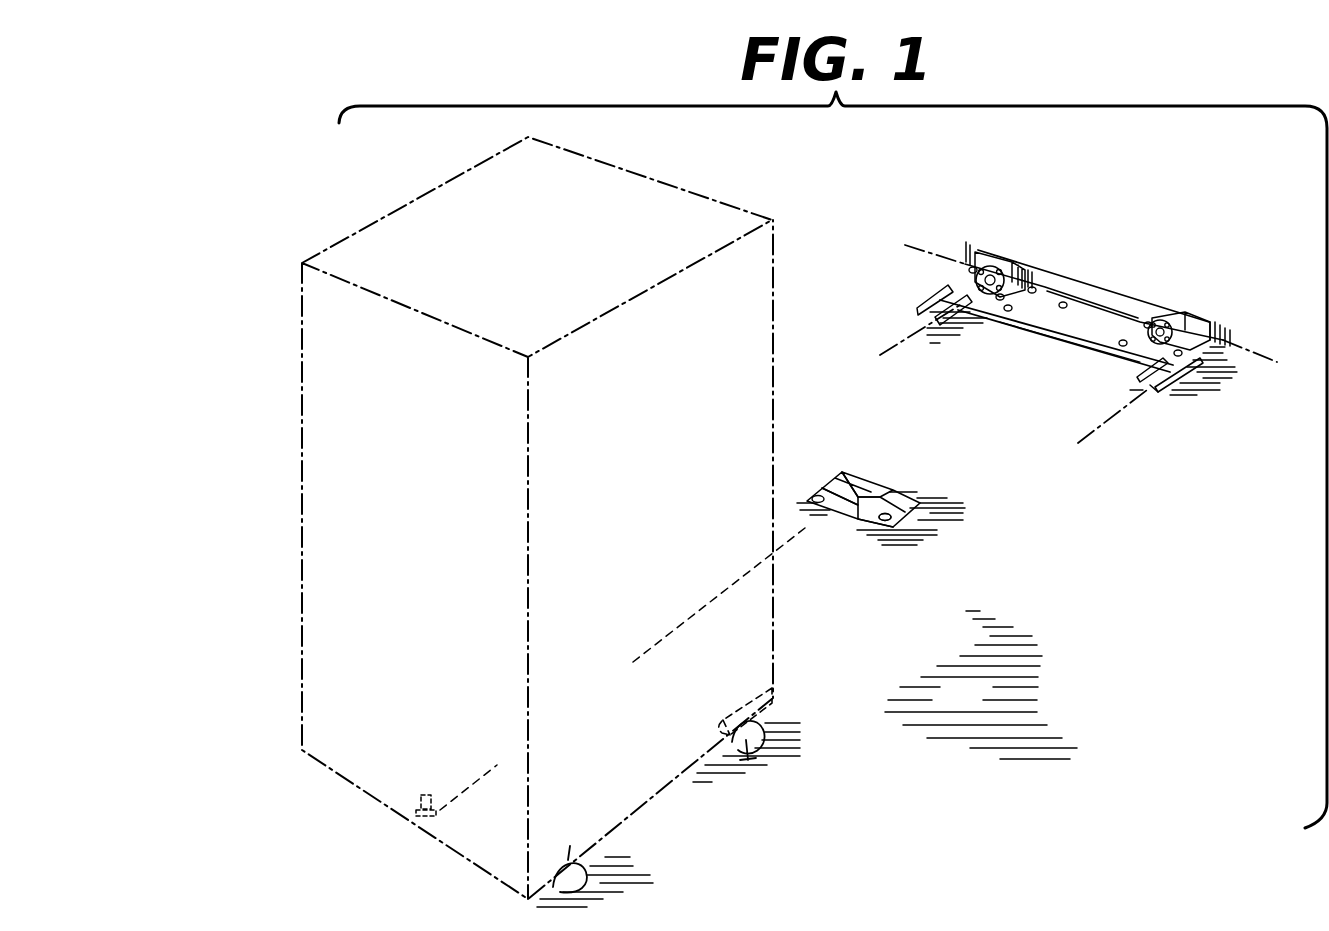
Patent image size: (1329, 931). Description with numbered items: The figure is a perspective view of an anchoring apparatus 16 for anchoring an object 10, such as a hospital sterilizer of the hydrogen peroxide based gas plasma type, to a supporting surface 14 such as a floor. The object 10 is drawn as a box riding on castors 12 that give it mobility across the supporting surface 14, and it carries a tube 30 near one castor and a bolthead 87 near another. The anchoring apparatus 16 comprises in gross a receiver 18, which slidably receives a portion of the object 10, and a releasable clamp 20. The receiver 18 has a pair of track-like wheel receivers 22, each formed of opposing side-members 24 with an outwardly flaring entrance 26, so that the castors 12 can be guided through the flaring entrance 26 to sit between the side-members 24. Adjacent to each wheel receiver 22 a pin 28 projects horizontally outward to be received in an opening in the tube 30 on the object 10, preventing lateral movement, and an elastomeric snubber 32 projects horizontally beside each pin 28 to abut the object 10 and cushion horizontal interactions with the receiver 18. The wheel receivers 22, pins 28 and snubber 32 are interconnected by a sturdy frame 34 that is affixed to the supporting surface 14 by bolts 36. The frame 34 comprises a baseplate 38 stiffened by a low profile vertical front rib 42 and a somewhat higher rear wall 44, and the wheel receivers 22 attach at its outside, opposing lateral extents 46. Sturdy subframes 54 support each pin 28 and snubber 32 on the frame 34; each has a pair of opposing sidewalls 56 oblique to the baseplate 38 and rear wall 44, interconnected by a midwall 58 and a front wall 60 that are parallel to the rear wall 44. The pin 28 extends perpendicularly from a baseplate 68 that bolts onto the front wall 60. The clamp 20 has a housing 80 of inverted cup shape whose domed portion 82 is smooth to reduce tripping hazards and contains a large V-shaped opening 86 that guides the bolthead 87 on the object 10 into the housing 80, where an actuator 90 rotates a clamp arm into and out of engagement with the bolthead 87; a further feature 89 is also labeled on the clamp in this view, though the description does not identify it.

The object 10 is at (786, 436).
The castors 12 is at (745, 740).
The supporting surface 14 is at (941, 709).
The anchoring apparatus 16 is at (1083, 413).
The receiver 18 is at (1081, 346).
The releasable clamp 20 is at (856, 535).
The wheel receivers 22 is at (1190, 363).
The side-members 24 is at (1173, 378).
The flaring entrance 26 is at (1169, 420).
The pin 28 is at (1145, 357).
The tube 30 is at (778, 692).
The elastomeric snubber 32 is at (1145, 324).
The frame 34 is at (1044, 355).
The bolts 36 is at (1060, 305).
The baseplate 38 is at (1033, 312).
The front rib 42 is at (1084, 346).
The rear wall 44 is at (1097, 292).
The lateral extents 46 is at (1220, 340).
The subframes 54 is at (1008, 247).
The sidewalls 56 is at (1000, 296).
The midwall 58 is at (990, 274).
The front wall 60 is at (972, 273).
The baseplate 68 is at (1183, 326).
The housing 80 is at (906, 478).
The domed portion 82 is at (851, 480).
The V-shaped opening 86 is at (862, 492).
The bolthead 87 is at (425, 832).
The hole 89 is at (890, 522).
The actuator 90 is at (856, 505).